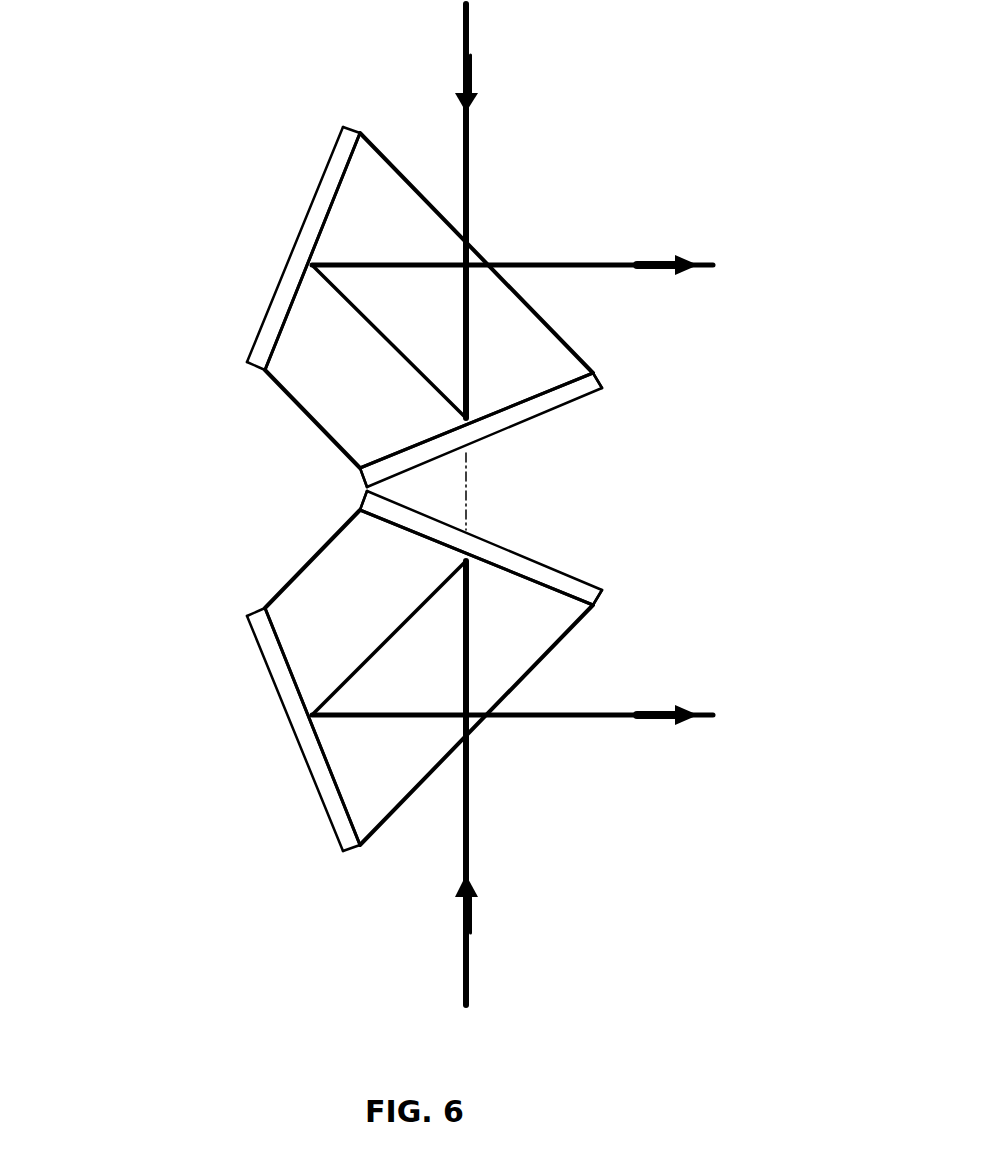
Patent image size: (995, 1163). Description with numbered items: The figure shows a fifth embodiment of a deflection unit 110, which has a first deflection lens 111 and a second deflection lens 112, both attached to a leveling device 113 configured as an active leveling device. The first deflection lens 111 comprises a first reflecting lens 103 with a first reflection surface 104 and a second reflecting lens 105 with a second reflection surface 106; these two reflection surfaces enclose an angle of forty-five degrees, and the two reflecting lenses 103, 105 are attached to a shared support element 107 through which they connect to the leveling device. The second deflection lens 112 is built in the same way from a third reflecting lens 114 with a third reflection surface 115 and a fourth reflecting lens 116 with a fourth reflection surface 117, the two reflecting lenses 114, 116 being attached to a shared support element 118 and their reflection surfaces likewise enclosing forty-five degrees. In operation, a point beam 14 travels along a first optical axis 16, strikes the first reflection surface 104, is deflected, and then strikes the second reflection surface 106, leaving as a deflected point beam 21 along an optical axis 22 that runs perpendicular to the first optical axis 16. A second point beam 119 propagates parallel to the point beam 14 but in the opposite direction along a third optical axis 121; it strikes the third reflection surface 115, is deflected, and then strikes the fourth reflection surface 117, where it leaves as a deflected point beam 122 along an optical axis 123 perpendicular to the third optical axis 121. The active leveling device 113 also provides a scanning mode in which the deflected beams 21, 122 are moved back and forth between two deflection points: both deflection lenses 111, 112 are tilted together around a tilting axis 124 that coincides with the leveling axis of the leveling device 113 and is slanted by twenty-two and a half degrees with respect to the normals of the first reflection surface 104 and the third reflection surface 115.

The second deflection lens 112 is at (431, 243).
The first deflection lens 111 is at (432, 741).
The fourth reflecting lens 116 is at (295, 265).
The fourth reflection surface 117 is at (345, 183).
The shared support element 118 is at (310, 373).
The third reflecting lens 114 is at (562, 397).
The third reflection surface 115 is at (518, 393).
The point beam 119 is at (469, 28).
The third optical axis 121 is at (469, 80).
The deflected point beam 122 is at (595, 265).
The optical axis 123 is at (663, 265).
The tilting axis 124 is at (470, 496).
The deflection unit 110 is at (168, 481).
The leveling device 113 is at (658, 494).
The shared support element 107 is at (310, 598).
The first reflecting lens 103 is at (565, 583).
The first reflection surface 104 is at (538, 592).
The second reflecting lens 105 is at (307, 735).
The second reflection surface 106 is at (352, 793).
The point beam 14 is at (471, 975).
The first optical axis 16 is at (471, 910).
The deflected point beam 21 is at (598, 717).
The optical axis 22 is at (663, 717).